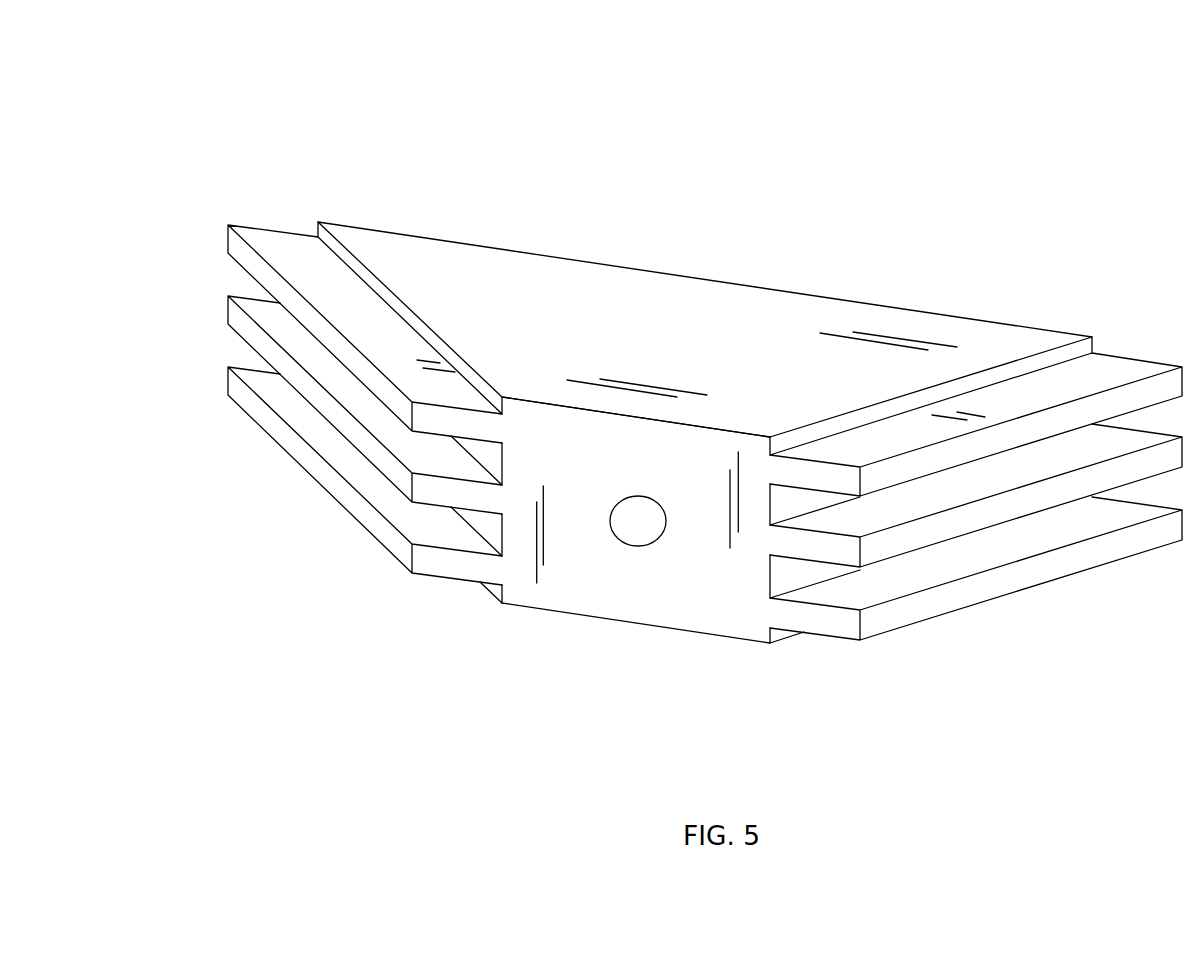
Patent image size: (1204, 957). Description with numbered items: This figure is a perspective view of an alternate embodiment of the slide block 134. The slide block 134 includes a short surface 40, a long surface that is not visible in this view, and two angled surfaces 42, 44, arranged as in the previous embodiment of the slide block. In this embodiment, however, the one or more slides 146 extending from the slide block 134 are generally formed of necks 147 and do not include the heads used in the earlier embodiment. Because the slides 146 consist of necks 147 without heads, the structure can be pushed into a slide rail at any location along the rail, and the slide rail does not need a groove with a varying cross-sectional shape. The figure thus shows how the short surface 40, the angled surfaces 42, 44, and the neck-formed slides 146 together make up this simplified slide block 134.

The slide block 134 is at (705, 417).
The angled surface 44 is at (937, 385).
The short surface 40 is at (638, 602).
The angled surface 42 is at (492, 597).
The slides 146 is at (272, 183).
The necks 147 is at (443, 420).